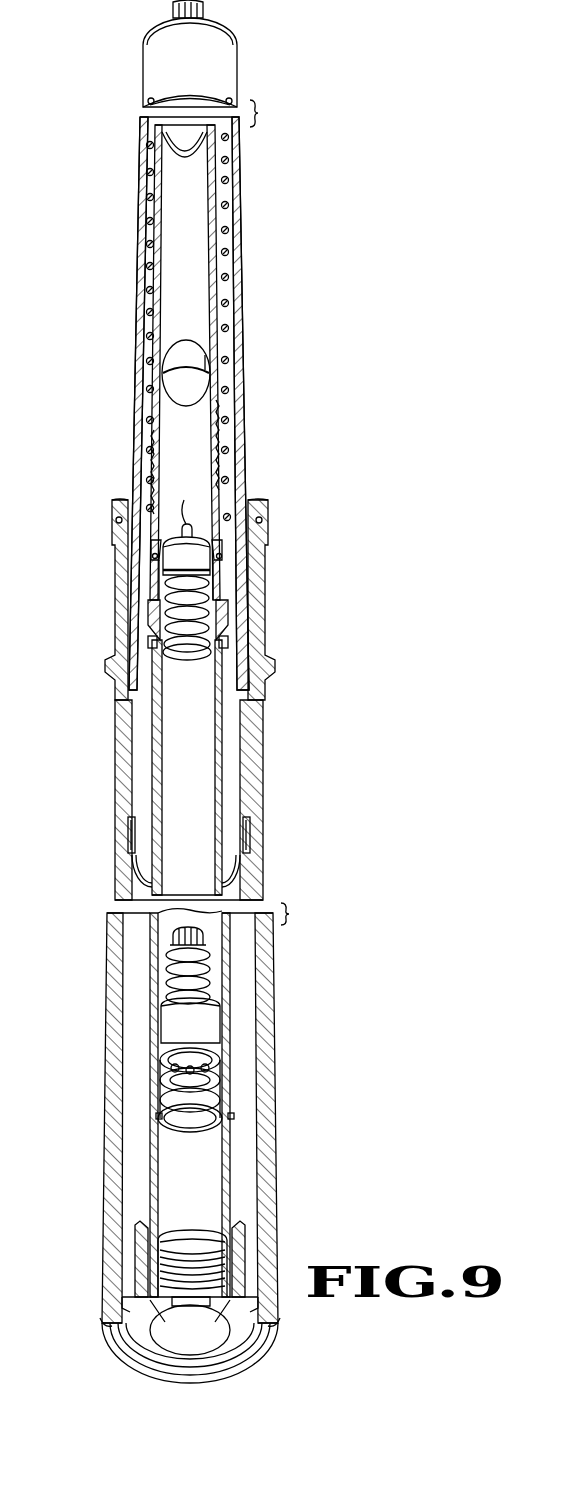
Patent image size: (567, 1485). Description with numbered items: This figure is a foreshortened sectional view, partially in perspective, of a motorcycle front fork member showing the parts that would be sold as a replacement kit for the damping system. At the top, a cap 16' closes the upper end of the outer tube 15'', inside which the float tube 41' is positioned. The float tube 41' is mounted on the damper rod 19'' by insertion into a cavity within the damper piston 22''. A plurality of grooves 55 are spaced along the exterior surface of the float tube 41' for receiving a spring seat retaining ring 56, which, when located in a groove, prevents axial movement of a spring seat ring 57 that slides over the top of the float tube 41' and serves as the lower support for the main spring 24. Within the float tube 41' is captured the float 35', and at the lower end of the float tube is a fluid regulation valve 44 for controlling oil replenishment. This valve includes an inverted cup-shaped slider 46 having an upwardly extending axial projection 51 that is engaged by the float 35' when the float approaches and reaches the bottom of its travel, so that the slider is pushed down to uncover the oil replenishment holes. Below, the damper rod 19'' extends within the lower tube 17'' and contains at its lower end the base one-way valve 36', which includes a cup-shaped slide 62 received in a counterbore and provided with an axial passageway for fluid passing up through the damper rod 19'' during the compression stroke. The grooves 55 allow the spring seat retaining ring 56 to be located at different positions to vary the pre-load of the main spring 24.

The cap 16' is at (227, 53).
The main spring 24 is at (226, 205).
The float tube 41' is at (154, 362).
The upper housing 15'' is at (228, 403).
The float 35' is at (236, 373).
The grooves 55 is at (240, 487).
The axial projection 51 is at (191, 505).
The spring seat ring 57 is at (222, 548).
The spring seat retaining ring 56 is at (220, 557).
The slider 46 is at (170, 560).
The damper piston 22'' is at (222, 599).
The fluid regulation valve 44 is at (178, 642).
The lower housing 17'' is at (228, 770).
The damper rod 19'' is at (235, 859).
The cup-shaped slide 62 is at (212, 1018).
The base one-way valve 36' is at (256, 1079).